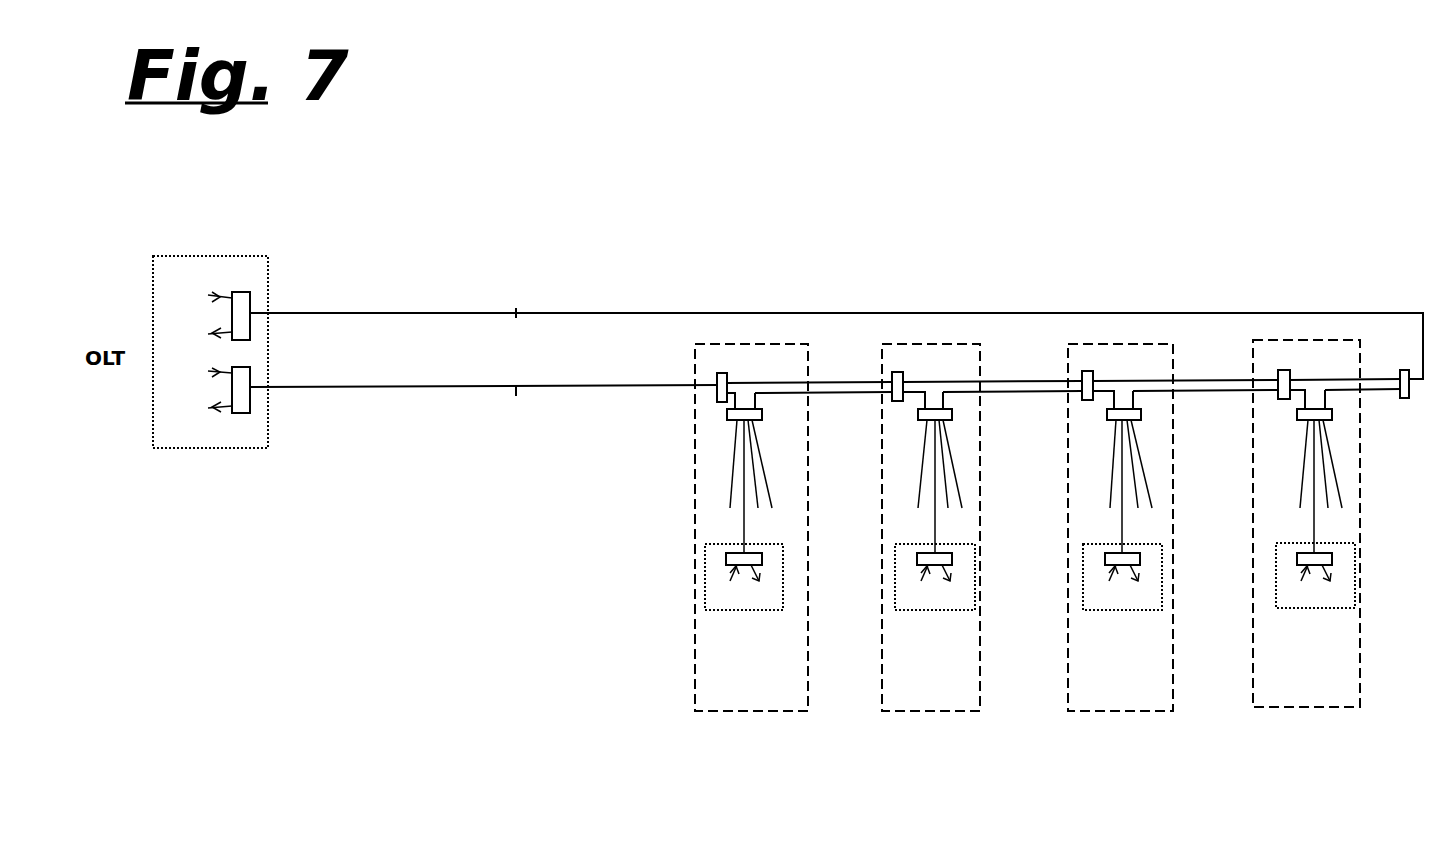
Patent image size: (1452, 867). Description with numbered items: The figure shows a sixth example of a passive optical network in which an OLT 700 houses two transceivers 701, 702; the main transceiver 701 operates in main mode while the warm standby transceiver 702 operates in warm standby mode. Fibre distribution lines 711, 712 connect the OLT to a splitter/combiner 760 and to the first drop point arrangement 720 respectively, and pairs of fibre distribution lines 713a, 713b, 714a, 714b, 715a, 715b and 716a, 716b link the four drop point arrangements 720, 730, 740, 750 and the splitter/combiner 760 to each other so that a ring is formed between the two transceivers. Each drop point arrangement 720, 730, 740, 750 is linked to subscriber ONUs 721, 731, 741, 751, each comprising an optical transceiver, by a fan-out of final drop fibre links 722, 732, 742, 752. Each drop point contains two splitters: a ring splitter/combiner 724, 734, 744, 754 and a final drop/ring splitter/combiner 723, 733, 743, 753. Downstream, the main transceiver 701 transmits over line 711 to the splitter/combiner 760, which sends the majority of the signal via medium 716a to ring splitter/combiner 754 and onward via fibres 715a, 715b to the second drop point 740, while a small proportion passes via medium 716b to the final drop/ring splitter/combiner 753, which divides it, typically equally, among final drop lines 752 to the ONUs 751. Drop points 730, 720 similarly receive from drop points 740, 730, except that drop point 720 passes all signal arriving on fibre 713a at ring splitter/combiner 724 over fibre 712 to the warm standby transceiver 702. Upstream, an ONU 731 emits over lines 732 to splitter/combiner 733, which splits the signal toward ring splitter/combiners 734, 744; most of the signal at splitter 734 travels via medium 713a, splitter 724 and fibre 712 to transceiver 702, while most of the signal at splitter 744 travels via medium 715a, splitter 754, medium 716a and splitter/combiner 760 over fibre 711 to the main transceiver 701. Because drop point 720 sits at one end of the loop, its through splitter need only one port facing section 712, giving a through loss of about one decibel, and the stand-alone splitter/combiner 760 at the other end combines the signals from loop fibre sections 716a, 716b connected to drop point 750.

The OLT 700 is at (210, 342).
The main transceiver 701 is at (216, 306).
The warm standby transceiver 702 is at (216, 403).
The fibre distribution line 711 is at (836, 332).
The fibre distribution line 712 is at (483, 403).
The fibre distribution line 713a is at (809, 376).
The fibre distribution line 713b is at (823, 403).
The fibre distribution line 714a is at (992, 376).
The fibre distribution line 714b is at (1012, 403).
The fibre distribution line 715a is at (1185, 376).
The fibre distribution line 715b is at (1205, 402).
The optical medium 716a is at (1346, 376).
The optical medium 716b is at (1364, 402).
The drop point arrangement 720 is at (751, 542).
The subscriber ONU 721 is at (745, 591).
The final drop fibre links 722 is at (736, 486).
The final drop/ring splitter/combiner 723 is at (732, 415).
The ring splitter/combiner 724 is at (731, 378).
The drop point arrangement 730 is at (931, 542).
The subscriber ONU 731 is at (935, 591).
The final drop fibre links 732 is at (923, 486).
The final drop/ring splitter/combiner 733 is at (921, 415).
The ring splitter/combiner 734 is at (914, 378).
The drop point arrangement 740 is at (1120, 542).
The subscriber ONU 741 is at (1122, 591).
The final drop fibre links 742 is at (1112, 486).
The final drop/ring splitter/combiner 743 is at (1109, 414).
The ring splitter/combiner 744 is at (1102, 378).
The drop point arrangement 750 is at (1306, 537).
The subscriber ONU 751 is at (1315, 589).
The final drop fibre links 752 is at (1301, 486).
The final drop/ring splitter/combiner 753 is at (1298, 414).
The ring splitter/combiner 754 is at (1292, 376).
The splitter/combiner 760 is at (1426, 390).